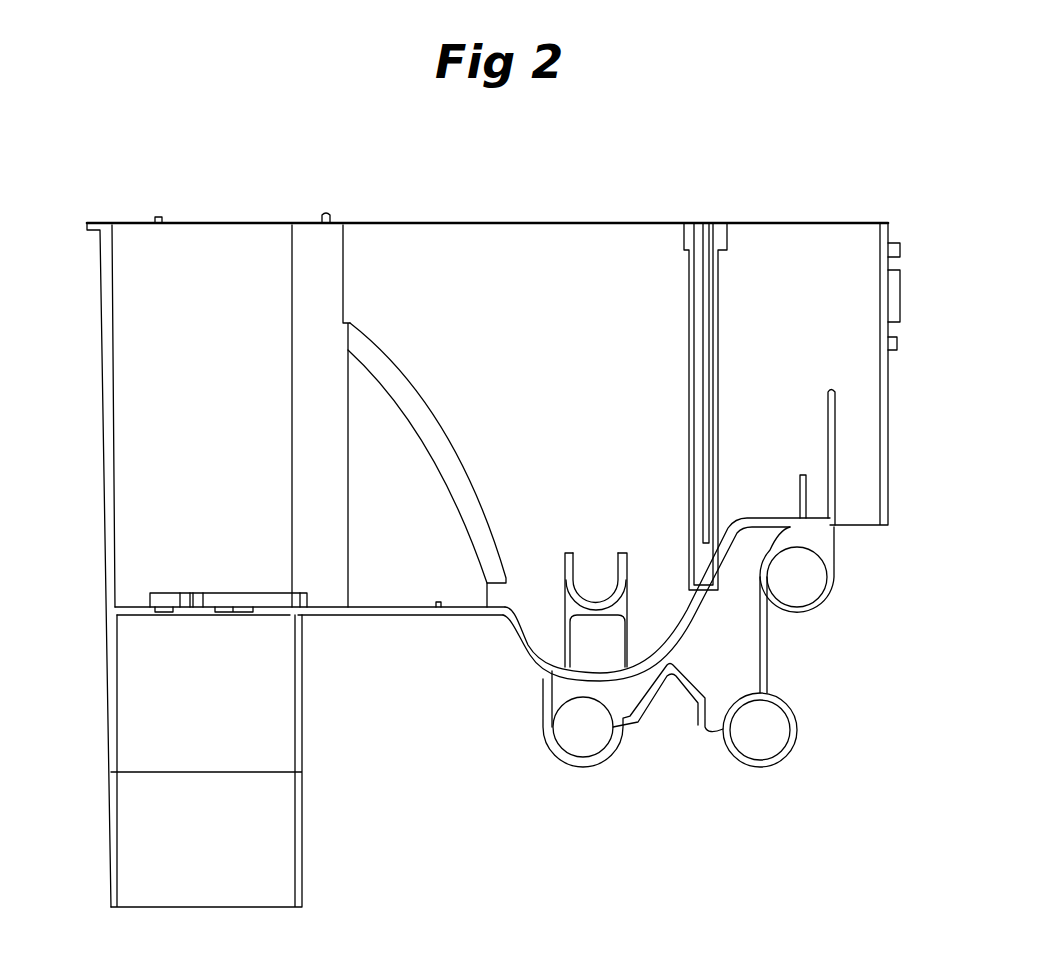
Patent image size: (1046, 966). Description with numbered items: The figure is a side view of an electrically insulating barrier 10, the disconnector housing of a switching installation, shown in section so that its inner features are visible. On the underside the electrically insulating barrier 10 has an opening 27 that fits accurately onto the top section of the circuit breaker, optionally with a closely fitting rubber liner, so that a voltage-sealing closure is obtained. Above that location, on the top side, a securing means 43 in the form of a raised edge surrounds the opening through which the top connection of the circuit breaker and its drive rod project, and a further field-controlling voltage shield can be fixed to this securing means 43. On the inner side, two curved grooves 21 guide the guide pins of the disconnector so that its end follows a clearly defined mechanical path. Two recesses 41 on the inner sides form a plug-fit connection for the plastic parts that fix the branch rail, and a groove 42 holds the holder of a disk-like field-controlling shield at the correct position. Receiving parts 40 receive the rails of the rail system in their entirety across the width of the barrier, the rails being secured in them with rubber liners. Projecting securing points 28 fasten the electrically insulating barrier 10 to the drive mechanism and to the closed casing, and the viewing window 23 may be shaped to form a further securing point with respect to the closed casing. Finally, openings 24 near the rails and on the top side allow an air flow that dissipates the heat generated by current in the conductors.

The electrically insulating barrier 10 is at (762, 205).
The curved groove 21 is at (481, 512).
The viewing window 23 is at (898, 300).
The opening 24 is at (130, 218).
The opening 27 is at (117, 778).
The securing point 28 is at (162, 220).
The receiving part 40 is at (585, 735).
The recess 41 is at (710, 238).
The groove 42 is at (573, 605).
The securing means 43 is at (148, 598).